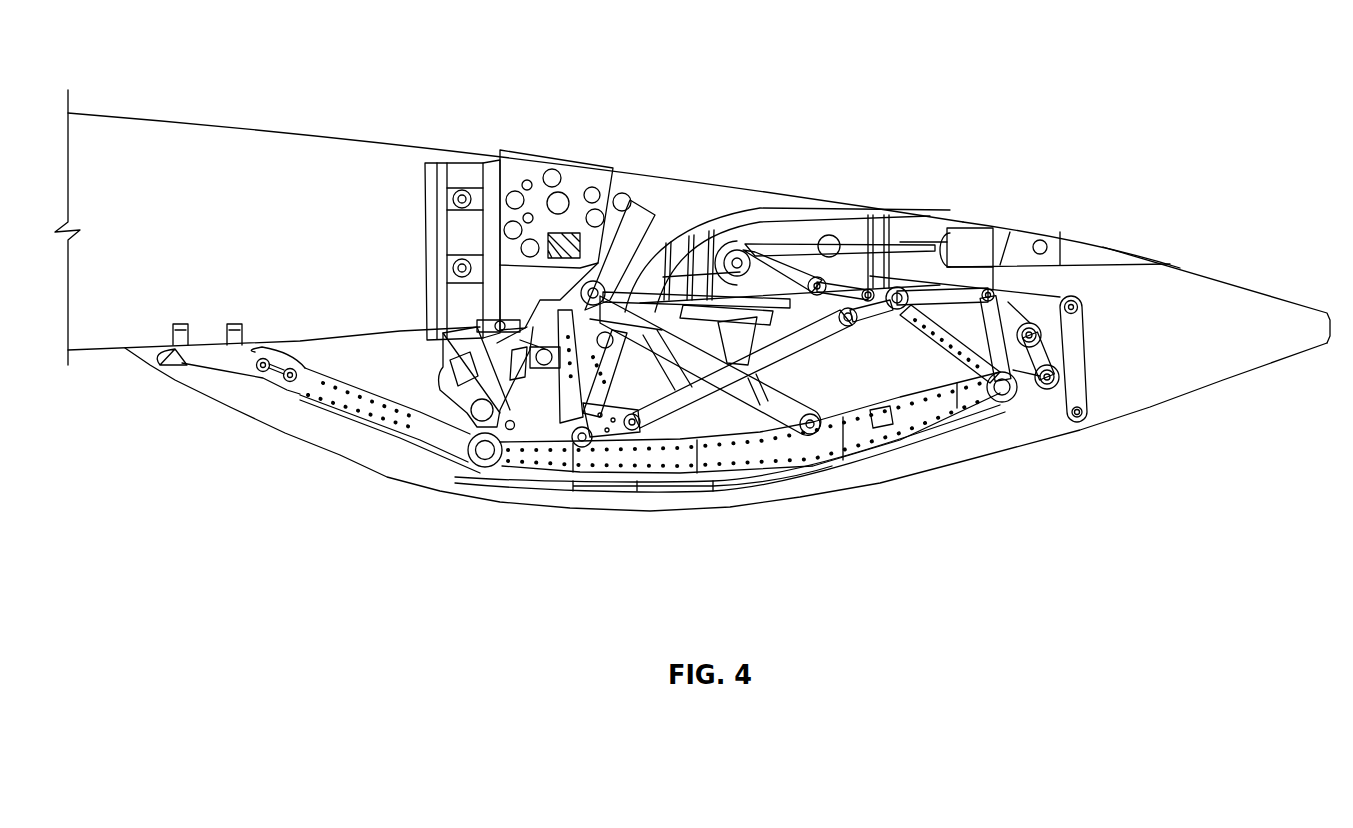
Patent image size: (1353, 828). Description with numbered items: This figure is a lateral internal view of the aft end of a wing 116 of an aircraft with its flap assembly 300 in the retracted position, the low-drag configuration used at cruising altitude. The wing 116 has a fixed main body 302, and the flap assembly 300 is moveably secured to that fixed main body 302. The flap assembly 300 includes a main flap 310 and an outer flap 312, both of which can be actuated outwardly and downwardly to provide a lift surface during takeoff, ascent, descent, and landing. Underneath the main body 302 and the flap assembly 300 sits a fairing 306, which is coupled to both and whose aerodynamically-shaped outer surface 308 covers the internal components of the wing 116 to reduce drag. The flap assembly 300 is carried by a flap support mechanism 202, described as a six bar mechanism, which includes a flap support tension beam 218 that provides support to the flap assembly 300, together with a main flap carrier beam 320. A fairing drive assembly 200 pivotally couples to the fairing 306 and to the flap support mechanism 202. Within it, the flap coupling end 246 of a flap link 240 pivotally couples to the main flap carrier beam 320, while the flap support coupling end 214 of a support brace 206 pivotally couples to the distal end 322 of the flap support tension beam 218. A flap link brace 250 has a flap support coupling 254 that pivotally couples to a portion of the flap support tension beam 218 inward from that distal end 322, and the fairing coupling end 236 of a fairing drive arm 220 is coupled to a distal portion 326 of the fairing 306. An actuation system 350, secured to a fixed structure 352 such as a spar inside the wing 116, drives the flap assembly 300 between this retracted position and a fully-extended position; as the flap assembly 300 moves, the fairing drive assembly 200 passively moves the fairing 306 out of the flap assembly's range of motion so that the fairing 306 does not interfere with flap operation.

The wing 116 is at (365, 140).
The fairing drive assembly 200 is at (1057, 298).
The flap support mechanism 202 is at (710, 476).
The support brace 206 is at (1047, 350).
The flap support coupling end 214 is at (1040, 390).
The flap support tension beam 218 is at (812, 470).
The fairing drive arm 220 is at (1083, 382).
The fairing coupling end 236 is at (1087, 421).
The flap link 240 is at (932, 288).
The flap coupling end 246 is at (903, 288).
The flap link brace 250 is at (1052, 302).
The flap support coupling 254 is at (968, 380).
The flap assembly 300 is at (962, 221).
The fixed main body 302 is at (183, 124).
The fairing 306 is at (543, 505).
The outer surface 308 is at (360, 464).
The main flap 310 is at (820, 233).
The outer flap 312 is at (1073, 250).
The main flap carrier beam 320 is at (887, 315).
The distal end 322 is at (1038, 390).
The distal portion 326 is at (1079, 427).
The actuation system 350 is at (626, 314).
The fixed structure 352 is at (530, 210).